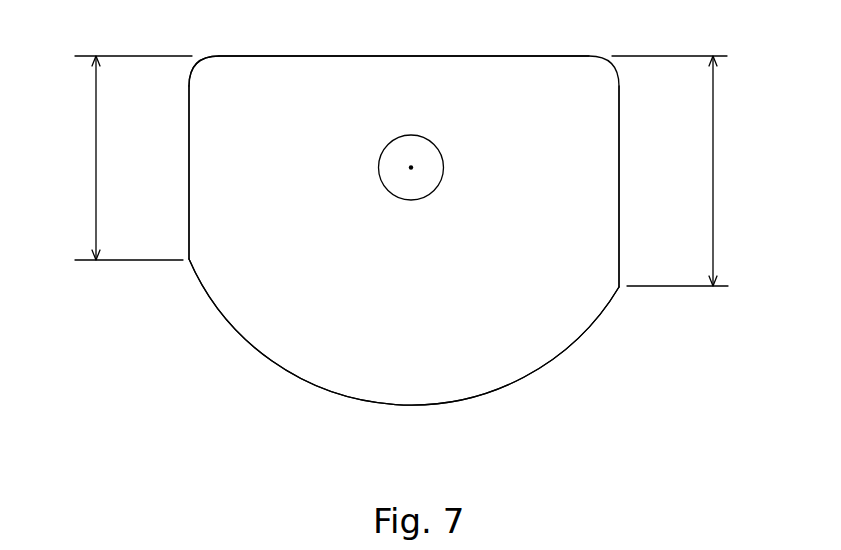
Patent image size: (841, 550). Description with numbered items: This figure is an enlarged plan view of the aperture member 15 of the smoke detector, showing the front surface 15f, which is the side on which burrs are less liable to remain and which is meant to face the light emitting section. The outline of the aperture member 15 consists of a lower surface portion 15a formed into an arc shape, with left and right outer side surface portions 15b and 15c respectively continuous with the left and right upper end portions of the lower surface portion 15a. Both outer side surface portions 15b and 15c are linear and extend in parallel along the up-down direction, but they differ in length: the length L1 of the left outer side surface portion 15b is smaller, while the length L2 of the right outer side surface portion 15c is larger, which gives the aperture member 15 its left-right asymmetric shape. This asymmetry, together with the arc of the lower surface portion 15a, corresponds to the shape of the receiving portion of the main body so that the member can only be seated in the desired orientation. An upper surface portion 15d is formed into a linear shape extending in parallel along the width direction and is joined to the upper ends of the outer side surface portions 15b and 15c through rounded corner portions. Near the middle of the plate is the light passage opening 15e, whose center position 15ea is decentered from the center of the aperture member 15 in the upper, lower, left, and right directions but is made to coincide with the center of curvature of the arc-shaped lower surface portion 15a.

The aperture member 15 is at (547, 56).
The lower surface portion 15a is at (410, 405).
The left outer side surface portion 15b is at (189, 154).
The right outer side surface portion 15c is at (619, 163).
The upper surface portion 15d is at (333, 56).
The light passage opening 15e is at (432, 140).
The center position of the light passage opening 15ea is at (411, 167).
The front surface 15f is at (251, 78).
The length of the left outer side surface portion L1 is at (96, 154).
The length of the right outer side surface portion L2 is at (713, 163).